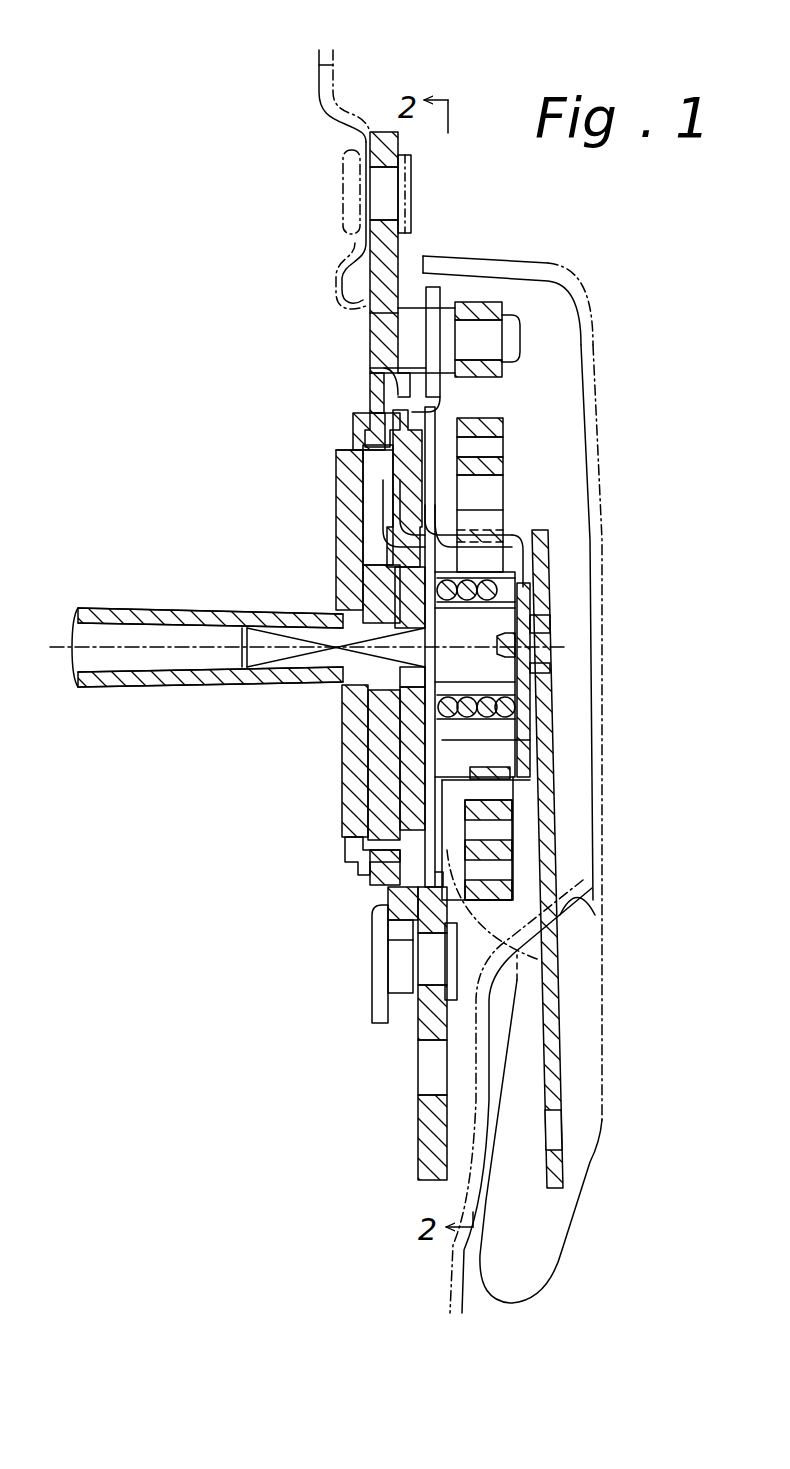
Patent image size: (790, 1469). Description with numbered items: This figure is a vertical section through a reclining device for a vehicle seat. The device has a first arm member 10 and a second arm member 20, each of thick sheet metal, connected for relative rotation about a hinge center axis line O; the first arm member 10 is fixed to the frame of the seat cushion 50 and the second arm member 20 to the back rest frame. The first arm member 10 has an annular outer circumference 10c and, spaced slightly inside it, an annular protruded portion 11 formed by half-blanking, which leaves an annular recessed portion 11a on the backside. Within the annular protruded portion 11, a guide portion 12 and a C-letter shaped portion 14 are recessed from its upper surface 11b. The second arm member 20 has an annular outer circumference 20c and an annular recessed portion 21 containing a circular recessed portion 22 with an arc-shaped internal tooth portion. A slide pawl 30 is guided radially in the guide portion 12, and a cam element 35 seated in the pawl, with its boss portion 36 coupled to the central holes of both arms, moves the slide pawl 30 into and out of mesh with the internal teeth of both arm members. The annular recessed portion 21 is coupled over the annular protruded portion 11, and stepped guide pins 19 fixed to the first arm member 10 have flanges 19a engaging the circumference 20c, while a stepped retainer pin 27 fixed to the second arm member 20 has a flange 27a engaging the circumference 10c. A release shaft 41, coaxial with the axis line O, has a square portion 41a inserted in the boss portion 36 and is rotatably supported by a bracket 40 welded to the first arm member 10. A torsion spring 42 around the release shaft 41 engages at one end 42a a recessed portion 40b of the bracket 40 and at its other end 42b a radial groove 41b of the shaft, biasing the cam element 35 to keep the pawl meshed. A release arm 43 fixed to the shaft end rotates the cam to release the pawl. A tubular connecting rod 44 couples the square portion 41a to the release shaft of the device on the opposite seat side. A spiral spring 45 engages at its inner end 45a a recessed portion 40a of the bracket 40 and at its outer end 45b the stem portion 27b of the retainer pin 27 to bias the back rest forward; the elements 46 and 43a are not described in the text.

The seat cushion 50 is at (337, 57).
The stepped retainer pin 27 is at (362, 310).
The flange 27a is at (432, 292).
The stem portion 27b is at (483, 342).
The first arm member 10 is at (411, 1028).
The annular outer circumference 10c is at (385, 340).
The annular protruded portion 11 is at (396, 382).
The annular recessed portion 11a is at (430, 413).
The upper surface 11b is at (365, 425).
The annular recessed portion 21 is at (375, 415).
The C-letter shaped portion 14 is at (390, 458).
The second arm member 20 is at (334, 500).
The annular outer circumference 20c is at (400, 930).
The cam element 35 is at (373, 573).
The boss portion 36 is at (398, 615).
The tubular connecting rod 44 is at (137, 622).
The square portion 41a is at (257, 638).
The hinge center axis line O is at (157, 650).
The recessed guide portion 12 is at (345, 727).
The slide pawl 30 is at (370, 770).
The circular recessed portion 22 is at (380, 800).
The flange 19a is at (385, 968).
The stepped guide pin 19 is at (412, 1027).
The spiral spring 45 is at (492, 420).
The inner end 45a is at (487, 520).
The outer end 45b is at (478, 303).
The cover member 46 is at (600, 433).
The bracket 40 is at (533, 780).
The recessed portion 40a is at (520, 540).
The recessed portion 40b is at (432, 773).
The torsion spring 42 is at (520, 592).
The one end 42a is at (540, 958).
The other end 42b is at (505, 640).
The release shaft 41 is at (530, 615).
The radial groove 41b is at (517, 636).
The release arm 43 is at (558, 858).
The rotor strap 43a is at (588, 1167).